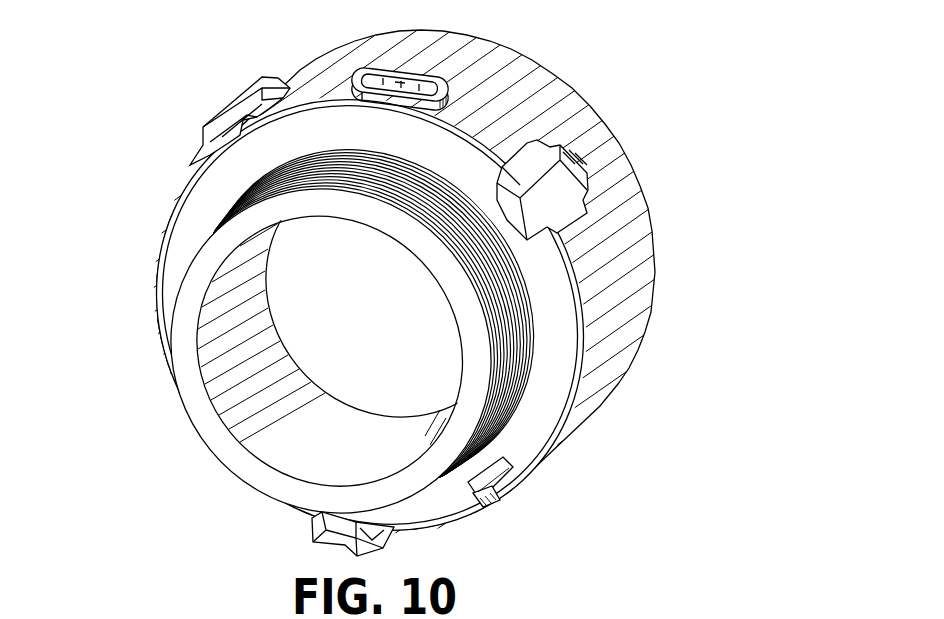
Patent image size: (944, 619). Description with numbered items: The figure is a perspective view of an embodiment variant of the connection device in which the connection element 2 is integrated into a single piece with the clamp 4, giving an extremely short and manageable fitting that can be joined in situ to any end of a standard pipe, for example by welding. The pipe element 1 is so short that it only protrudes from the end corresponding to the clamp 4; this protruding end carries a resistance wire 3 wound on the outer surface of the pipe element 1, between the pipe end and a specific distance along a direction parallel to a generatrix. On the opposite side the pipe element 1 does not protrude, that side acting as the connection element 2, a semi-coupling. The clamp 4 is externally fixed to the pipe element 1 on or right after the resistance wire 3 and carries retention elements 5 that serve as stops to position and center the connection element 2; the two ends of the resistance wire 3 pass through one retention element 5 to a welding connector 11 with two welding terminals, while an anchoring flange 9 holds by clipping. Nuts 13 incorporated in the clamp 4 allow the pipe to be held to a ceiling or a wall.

The pipe element 1 is at (190, 390).
The connection element 2 is at (310, 330).
The resistance wire 3 is at (513, 323).
The clamp 4 is at (470, 137).
The retention element 5 is at (560, 181).
The anchoring flange 9 is at (198, 152).
The welding connector 11 is at (356, 76).
The nut 13 is at (487, 478).